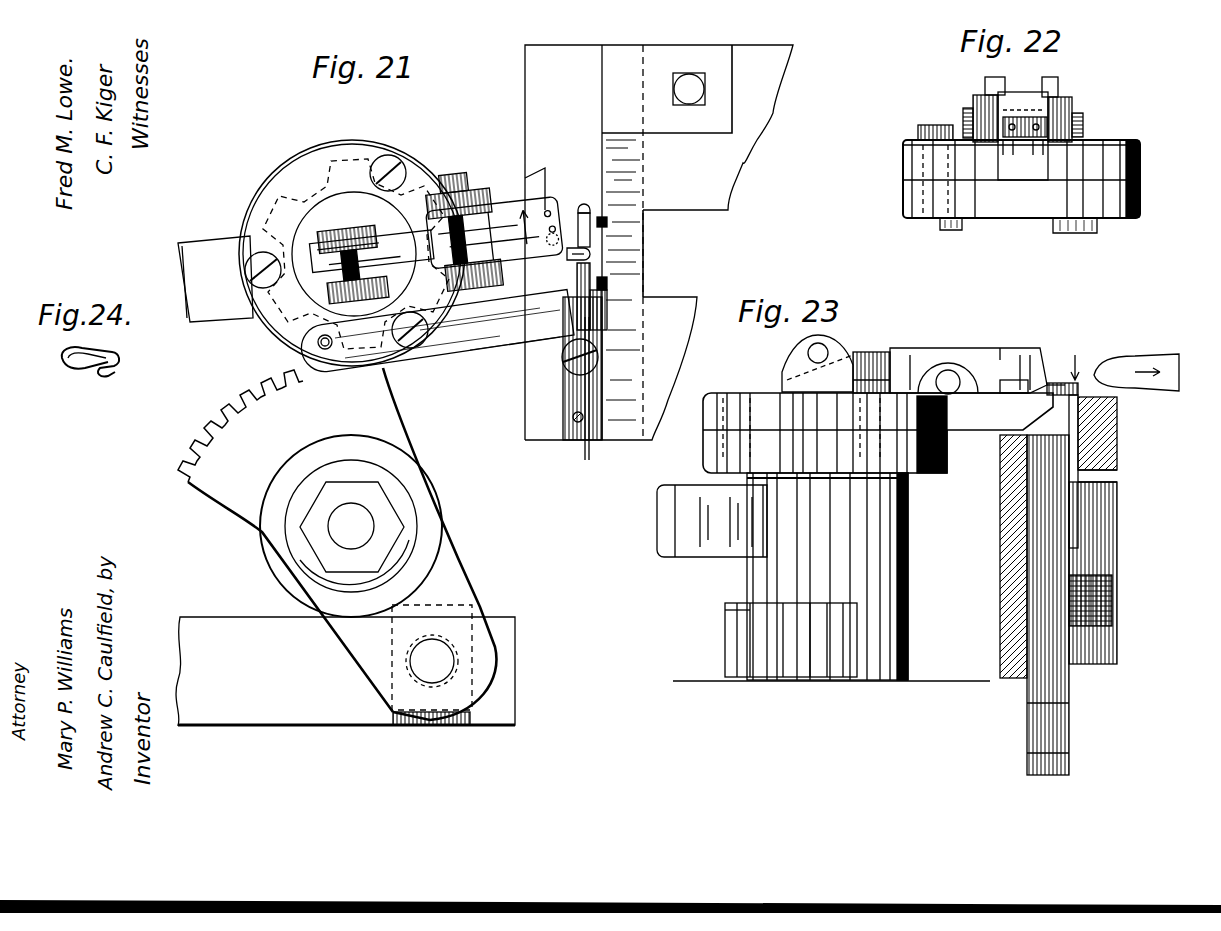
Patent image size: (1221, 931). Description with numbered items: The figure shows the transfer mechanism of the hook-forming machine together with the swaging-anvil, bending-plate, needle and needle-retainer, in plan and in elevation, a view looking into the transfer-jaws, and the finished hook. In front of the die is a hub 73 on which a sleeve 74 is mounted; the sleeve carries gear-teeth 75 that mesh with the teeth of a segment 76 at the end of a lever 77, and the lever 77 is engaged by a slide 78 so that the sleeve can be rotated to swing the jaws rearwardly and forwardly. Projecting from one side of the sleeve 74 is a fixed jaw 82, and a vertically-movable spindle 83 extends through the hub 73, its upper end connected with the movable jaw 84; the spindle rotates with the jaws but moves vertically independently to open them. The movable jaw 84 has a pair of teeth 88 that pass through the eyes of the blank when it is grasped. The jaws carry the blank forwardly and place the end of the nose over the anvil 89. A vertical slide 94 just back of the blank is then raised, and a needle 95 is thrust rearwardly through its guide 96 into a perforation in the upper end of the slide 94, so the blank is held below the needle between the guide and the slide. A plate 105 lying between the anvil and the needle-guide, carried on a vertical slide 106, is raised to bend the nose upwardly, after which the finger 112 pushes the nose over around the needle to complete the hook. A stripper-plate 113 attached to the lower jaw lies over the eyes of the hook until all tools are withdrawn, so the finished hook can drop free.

In FIG. 21, the hub 73 is at (347, 205).
In FIG. 21, the sleeve 74 is at (322, 168).
In FIG. 22, the sleeve 74 is at (1067, 223).
In FIG. 23, the sleeve 74 is at (905, 560).
In FIG. 23, the gear-teeth 75 is at (725, 644).
In FIG. 21, the segment 76 is at (243, 447).
In FIG. 21, the lever 77 is at (395, 650).
In FIG. 21, the slide 78 is at (345, 671).
In FIG. 22, the fixed jaw 82 is at (1023, 136).
In FIG. 23, the fixed jaw 82 is at (1026, 401).
In FIG. 21, the spindle 83 is at (354, 277).
In FIG. 22, the spindle 83 is at (980, 92).
In FIG. 23, the spindle 83 is at (840, 360).
In FIG. 21, the movable jaw 84 is at (424, 245).
In FIG. 22, the movable jaw 84 is at (1035, 104).
In FIG. 23, the movable jaw 84 is at (1012, 360).
In FIG. 21, the teeth 88 is at (494, 228).
In FIG. 22, the teeth 88 is at (1045, 120).
In FIG. 23, the teeth 88 is at (1062, 380).
In FIG. 21, the anvil 89 is at (605, 256).
In FIG. 23, the anvil 89 is at (1117, 425).
In FIG. 21, the vertical slide 94 is at (580, 202).
In FIG. 23, the vertical slide 94 is at (1060, 420).
In FIG. 21, the needle 95 is at (568, 355).
In FIG. 23, the needle 95 is at (1078, 388).
In FIG. 21, the guide 96 is at (600, 283).
In FIG. 21, the plate 105 is at (605, 230).
In FIG. 23, the plate 105 is at (1117, 455).
In FIG. 23, the vertical slide 106 is at (1112, 535).
In FIG. 23, the finger 112 is at (1110, 375).
In FIG. 21, the stripper-plate 113 is at (470, 352).
In FIG. 22, the stripper-plate 113 is at (920, 130).
In FIG. 23, the stripper-plate 113 is at (962, 360).